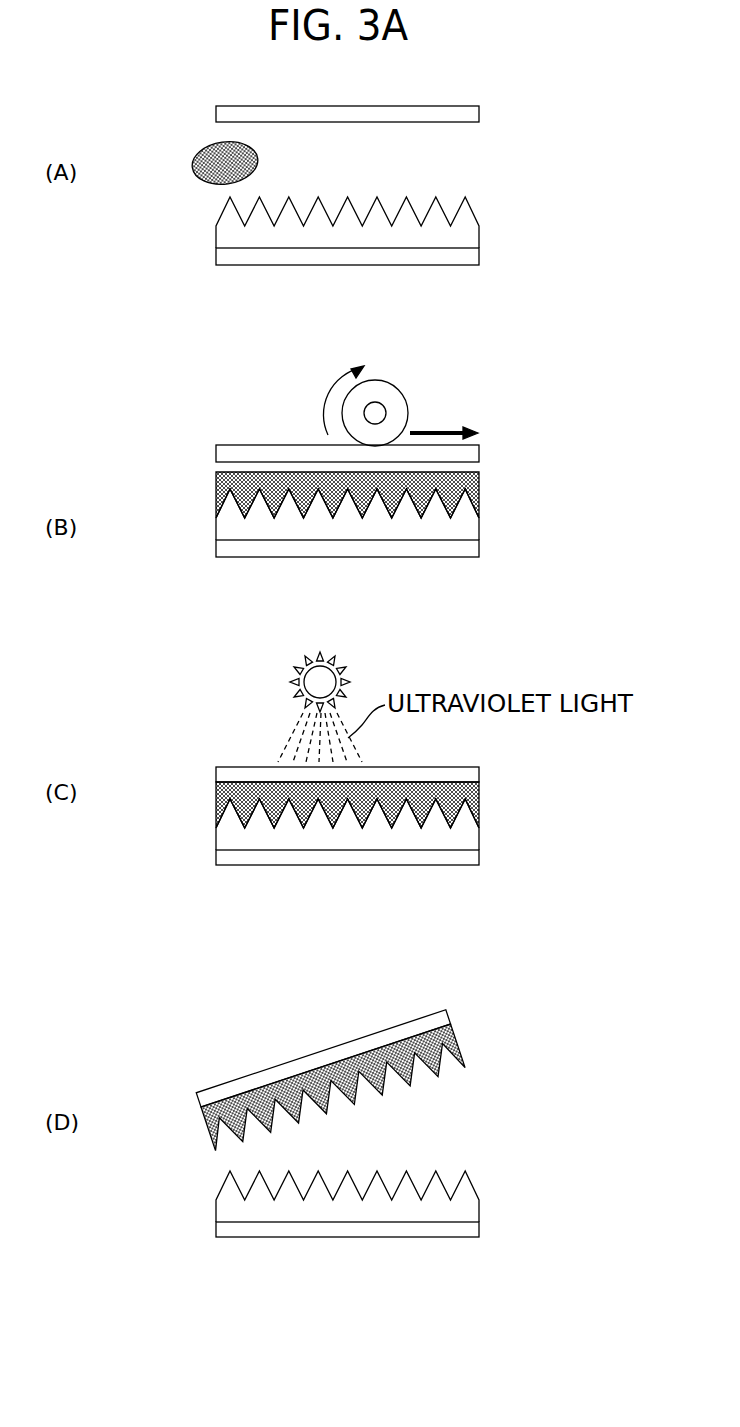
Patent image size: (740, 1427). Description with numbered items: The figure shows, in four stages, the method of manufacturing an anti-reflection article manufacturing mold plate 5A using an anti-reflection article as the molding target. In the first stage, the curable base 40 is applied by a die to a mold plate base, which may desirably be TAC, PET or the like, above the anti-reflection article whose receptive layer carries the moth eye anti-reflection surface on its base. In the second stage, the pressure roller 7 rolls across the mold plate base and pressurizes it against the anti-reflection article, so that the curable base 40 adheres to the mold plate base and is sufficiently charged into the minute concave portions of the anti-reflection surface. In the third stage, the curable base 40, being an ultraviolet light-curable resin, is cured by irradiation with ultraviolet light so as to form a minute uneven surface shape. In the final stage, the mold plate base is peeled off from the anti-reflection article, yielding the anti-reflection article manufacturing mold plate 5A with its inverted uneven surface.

The anti-reflection article manufacturing mold plate 5A is at (351, 1078).
The pressure roller 7 is at (392, 405).
The curable base 40 is at (200, 150).